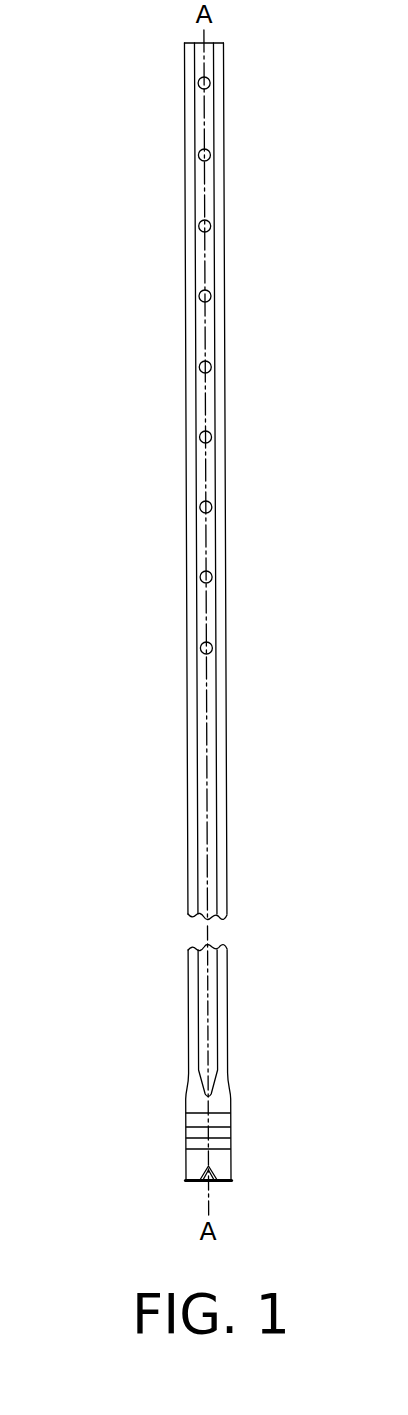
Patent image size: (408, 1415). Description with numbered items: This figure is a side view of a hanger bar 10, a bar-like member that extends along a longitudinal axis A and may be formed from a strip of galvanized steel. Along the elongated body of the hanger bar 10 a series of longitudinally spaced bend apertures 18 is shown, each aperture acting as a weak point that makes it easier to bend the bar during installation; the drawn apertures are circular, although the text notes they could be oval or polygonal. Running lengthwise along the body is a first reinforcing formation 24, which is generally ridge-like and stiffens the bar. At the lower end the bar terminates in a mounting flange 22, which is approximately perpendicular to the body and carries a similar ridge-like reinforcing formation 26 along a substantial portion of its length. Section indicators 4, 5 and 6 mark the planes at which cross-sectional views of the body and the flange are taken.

The hanger bar 10 is at (126, 79).
The bend apertures 18 is at (200, 577).
The first reinforcing formation 24 is at (203, 713).
The mounting flange 22 is at (192, 1183).
The reinforcing formation 26 is at (215, 1176).
The section line 4- 4 is at (186, 249).
The section line 5- 5 is at (186, 437).
The section line 6- 6 is at (186, 1099).